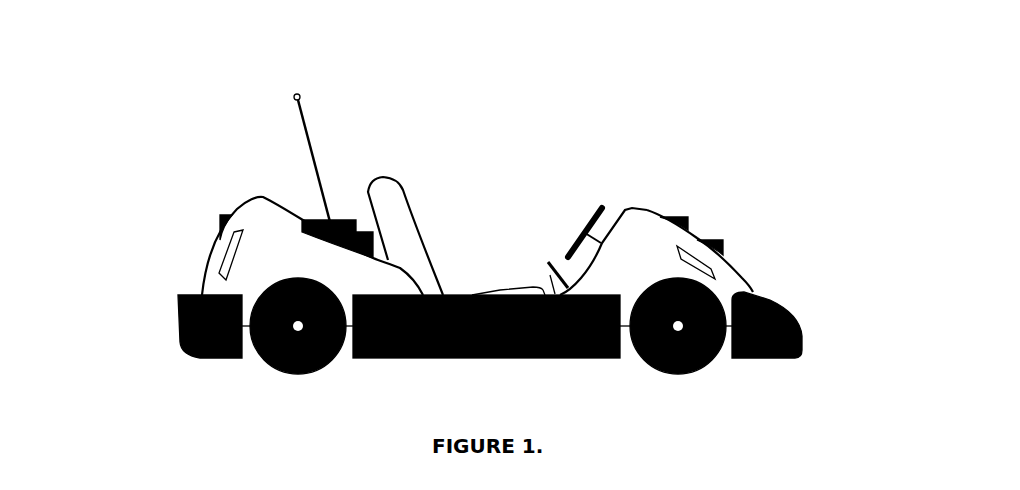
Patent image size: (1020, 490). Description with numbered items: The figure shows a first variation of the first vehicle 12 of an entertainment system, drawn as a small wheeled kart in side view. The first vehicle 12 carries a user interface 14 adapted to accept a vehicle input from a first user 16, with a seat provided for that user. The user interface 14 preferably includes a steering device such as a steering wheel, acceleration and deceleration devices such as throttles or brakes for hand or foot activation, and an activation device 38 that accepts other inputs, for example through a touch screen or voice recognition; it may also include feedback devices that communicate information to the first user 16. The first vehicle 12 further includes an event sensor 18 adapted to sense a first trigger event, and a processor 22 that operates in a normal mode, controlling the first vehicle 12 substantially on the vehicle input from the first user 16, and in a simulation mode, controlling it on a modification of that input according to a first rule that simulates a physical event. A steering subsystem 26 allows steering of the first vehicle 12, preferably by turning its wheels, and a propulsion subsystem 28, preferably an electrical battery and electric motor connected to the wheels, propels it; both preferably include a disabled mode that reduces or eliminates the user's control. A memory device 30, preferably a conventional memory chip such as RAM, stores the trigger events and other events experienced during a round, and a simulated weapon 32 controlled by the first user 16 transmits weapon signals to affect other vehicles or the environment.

The first vehicle 12 is at (130, 240).
The user interface 14 is at (624, 205).
The first user 16 is at (453, 245).
The event sensor 18 is at (298, 158).
The processor 22 is at (648, 210).
The steering subsystem 26 is at (582, 203).
The propulsion subsystem 28 is at (343, 222).
The memory device 30 is at (661, 216).
The simulated weapon 32 is at (724, 240).
The activation device 38 is at (575, 358).